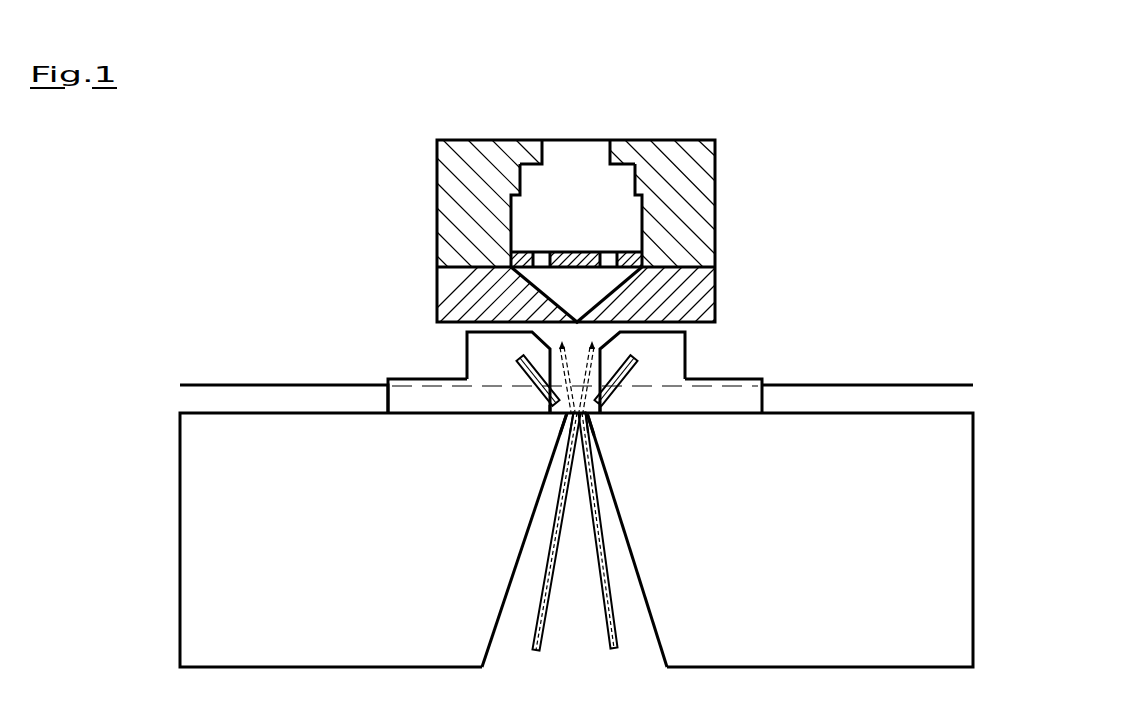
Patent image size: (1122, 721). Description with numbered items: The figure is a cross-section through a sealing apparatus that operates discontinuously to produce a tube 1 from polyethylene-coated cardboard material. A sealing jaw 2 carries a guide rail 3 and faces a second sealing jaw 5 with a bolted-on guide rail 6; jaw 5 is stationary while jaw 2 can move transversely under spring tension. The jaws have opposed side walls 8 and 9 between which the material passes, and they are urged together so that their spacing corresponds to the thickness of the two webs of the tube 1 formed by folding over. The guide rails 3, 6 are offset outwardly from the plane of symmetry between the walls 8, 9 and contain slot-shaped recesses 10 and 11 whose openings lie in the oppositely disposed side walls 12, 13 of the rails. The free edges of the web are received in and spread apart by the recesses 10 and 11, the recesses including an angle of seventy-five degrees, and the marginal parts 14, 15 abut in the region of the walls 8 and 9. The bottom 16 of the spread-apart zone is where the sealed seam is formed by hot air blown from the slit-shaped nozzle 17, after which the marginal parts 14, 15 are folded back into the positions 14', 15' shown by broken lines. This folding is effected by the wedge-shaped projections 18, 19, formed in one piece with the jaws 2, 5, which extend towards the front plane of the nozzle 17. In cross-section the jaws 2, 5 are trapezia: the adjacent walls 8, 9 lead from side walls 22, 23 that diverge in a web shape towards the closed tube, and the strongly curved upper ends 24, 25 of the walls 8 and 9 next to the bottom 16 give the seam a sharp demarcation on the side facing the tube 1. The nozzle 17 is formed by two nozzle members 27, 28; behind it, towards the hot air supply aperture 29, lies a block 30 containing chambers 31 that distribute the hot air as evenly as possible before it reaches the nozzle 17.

The tube 1 is at (540, 630).
The sealing jaw 2 is at (294, 603).
The guide rail 3 is at (405, 402).
The second sealing jaw 5 is at (854, 603).
The guide rail 6 is at (673, 362).
The side wall 8 is at (568, 432).
The side wall 9 is at (583, 433).
The slot-shaped recess 10 is at (513, 363).
The slot-shaped recess 11 is at (633, 372).
The side wall of guide rail 12 is at (528, 350).
The side wall of guide rail 13 is at (645, 348).
The marginal part 14 is at (501, 383).
The folded-back position of marginal part 14' is at (373, 363).
The marginal part 15 is at (837, 425).
The folded-back position of marginal part 15' is at (767, 363).
The bottom of spread-apart zone 16 is at (580, 338).
The slit-shaped nozzle 17 is at (577, 318).
The wedge-shaped projection 18 is at (570, 415).
The wedge-shaped projection 19 is at (597, 403).
The side wall 22 is at (508, 592).
The side wall 23 is at (643, 592).
The upper end of wall 24 is at (567, 417).
The upper end of wall 25 is at (583, 425).
The nozzle member 27 is at (463, 282).
The nozzle member 28 is at (698, 275).
The hot air supply aperture 29 is at (593, 150).
The block 30 is at (693, 165).
The chambers 31 is at (625, 223).